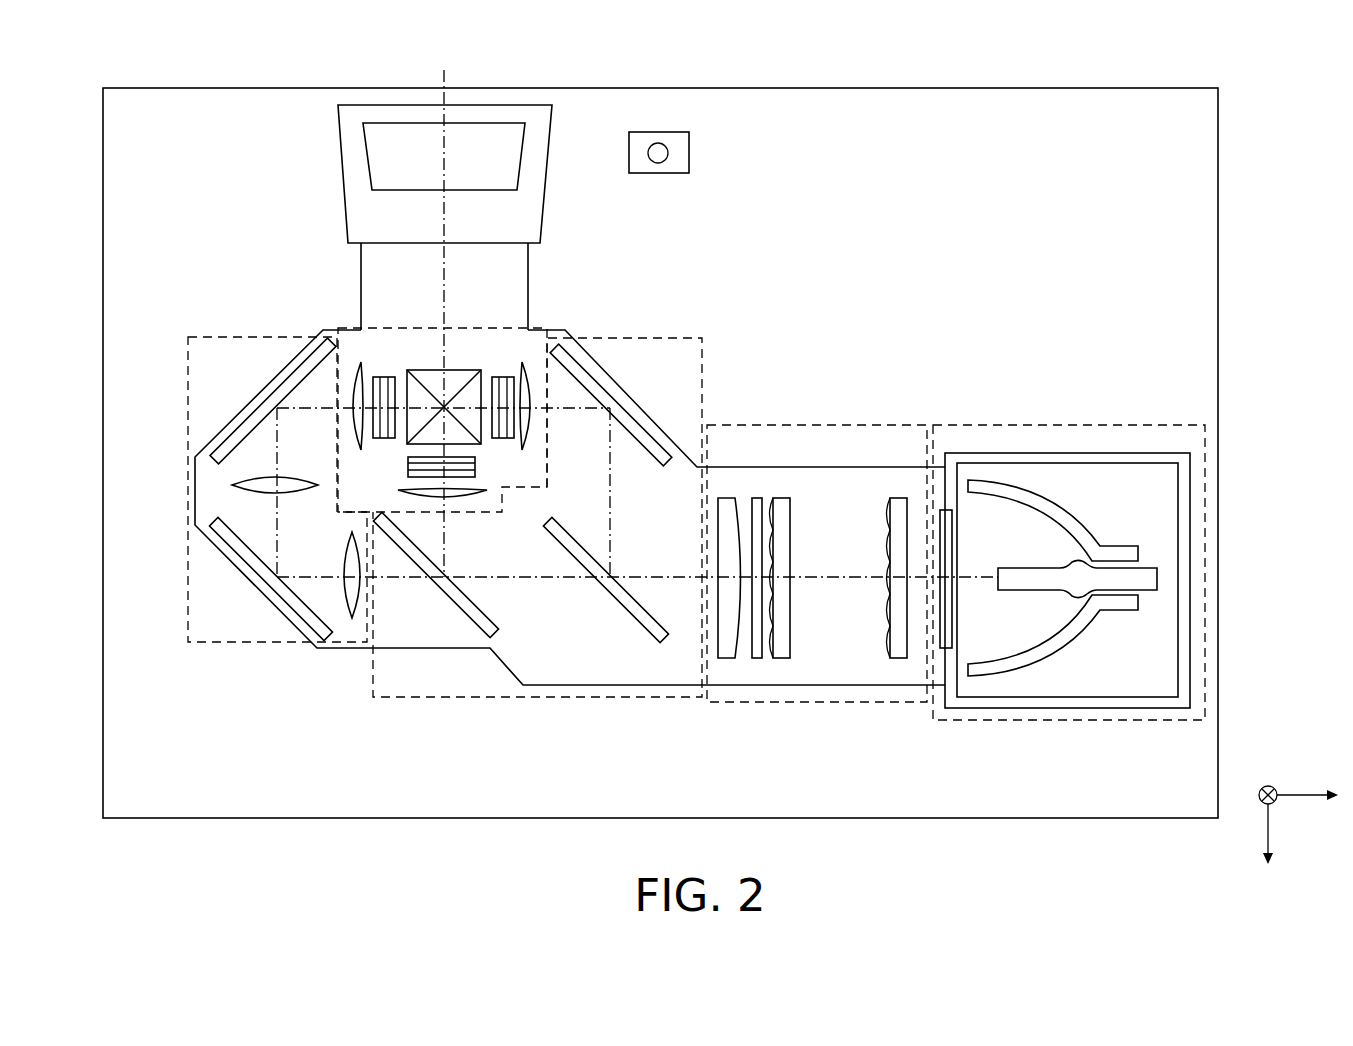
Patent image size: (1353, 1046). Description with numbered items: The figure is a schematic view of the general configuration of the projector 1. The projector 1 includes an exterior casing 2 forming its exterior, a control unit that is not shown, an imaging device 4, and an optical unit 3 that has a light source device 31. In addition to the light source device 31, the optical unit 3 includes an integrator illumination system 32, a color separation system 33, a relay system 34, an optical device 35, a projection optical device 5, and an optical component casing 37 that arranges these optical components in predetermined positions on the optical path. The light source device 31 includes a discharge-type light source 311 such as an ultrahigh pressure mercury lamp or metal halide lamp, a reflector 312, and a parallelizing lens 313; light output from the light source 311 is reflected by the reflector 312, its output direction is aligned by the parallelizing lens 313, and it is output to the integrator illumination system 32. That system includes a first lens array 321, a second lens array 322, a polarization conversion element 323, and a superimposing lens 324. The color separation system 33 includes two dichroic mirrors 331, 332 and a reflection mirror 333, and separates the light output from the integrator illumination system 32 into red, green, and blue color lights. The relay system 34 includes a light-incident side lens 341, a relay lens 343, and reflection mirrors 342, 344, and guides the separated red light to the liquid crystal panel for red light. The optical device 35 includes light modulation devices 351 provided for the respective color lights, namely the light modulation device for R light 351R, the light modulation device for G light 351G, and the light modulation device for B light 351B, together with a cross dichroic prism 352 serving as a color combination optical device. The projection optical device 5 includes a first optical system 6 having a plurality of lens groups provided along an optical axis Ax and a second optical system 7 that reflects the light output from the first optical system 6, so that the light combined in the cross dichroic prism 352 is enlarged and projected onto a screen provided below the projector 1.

The projector 1 is at (1026, 73).
The exterior casing 2 is at (100, 283).
The optical unit 3 is at (700, 316).
The imaging device 4 is at (690, 152).
The projection optical device 5 is at (322, 143).
The first optical system 6 is at (528, 262).
The second optical system 7 is at (378, 175).
The light source device 31 is at (972, 722).
The integrator illumination system 32 is at (795, 705).
The color separation system 33 is at (558, 700).
The relay system 34 is at (188, 429).
The optical device 35 is at (417, 344).
The optical component casing 37 is at (670, 688).
The light source 311 is at (1037, 585).
The reflector 312 is at (1085, 635).
The parallelizing lens 313 is at (937, 625).
The first lens array 321 is at (905, 505).
The second lens array 322 is at (790, 505).
The polarization conversion element 323 is at (770, 500).
The superimposing lens 324 is at (735, 500).
The dichroic mirror 331 is at (618, 600).
The dichroic mirror 332 is at (470, 617).
The reflection mirror 333 is at (630, 417).
The light-incident side lens 341 is at (347, 620).
The reflection mirror 342 is at (275, 595).
The relay lens 343 is at (288, 492).
The reflection mirror 344 is at (258, 420).
The light modulation device 351 is at (445, 429).
The light modulation device for R light 351R is at (375, 372).
The light modulation device for G light 351G is at (478, 468).
The light modulation device for B light 351B is at (512, 375).
The cross dichroic prism 352 is at (455, 375).
The optical axis Ax is at (446, 213).